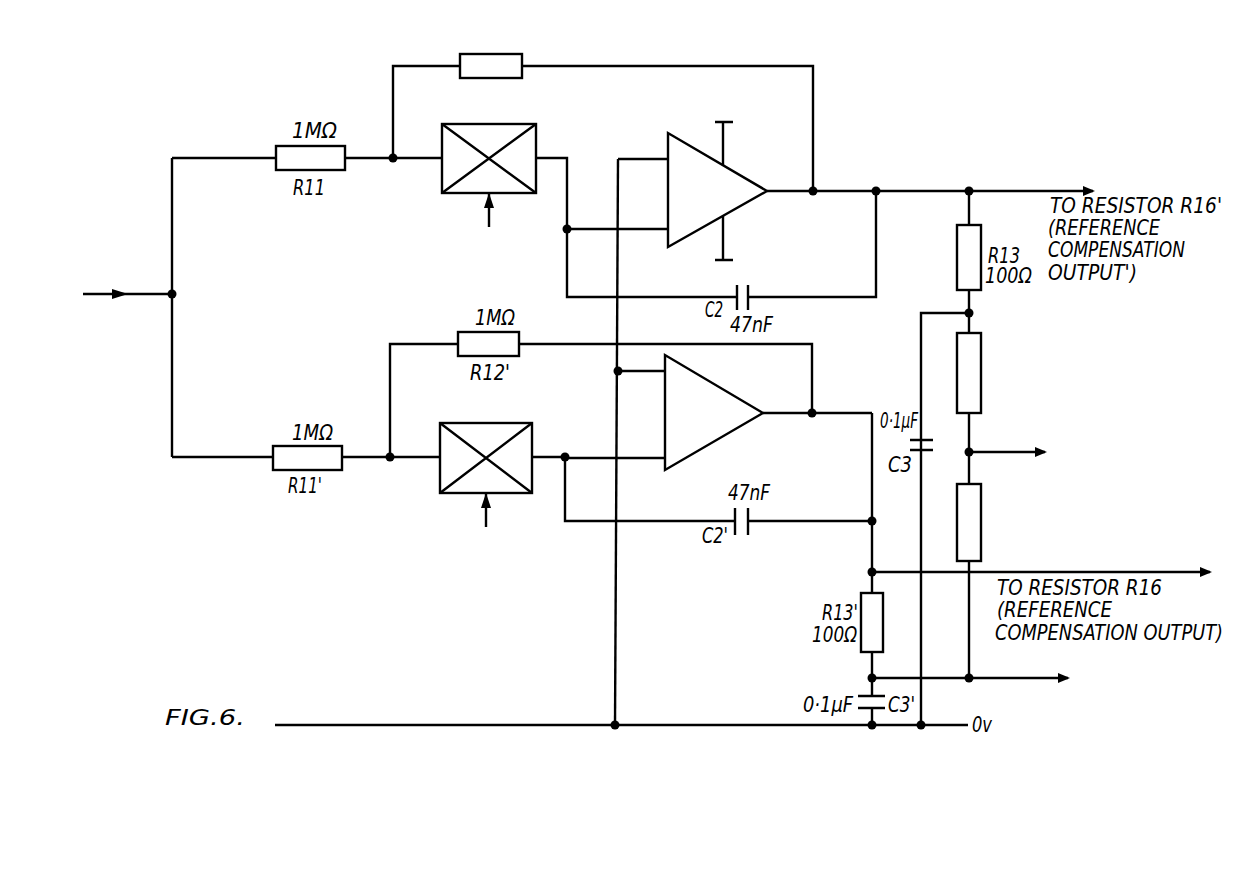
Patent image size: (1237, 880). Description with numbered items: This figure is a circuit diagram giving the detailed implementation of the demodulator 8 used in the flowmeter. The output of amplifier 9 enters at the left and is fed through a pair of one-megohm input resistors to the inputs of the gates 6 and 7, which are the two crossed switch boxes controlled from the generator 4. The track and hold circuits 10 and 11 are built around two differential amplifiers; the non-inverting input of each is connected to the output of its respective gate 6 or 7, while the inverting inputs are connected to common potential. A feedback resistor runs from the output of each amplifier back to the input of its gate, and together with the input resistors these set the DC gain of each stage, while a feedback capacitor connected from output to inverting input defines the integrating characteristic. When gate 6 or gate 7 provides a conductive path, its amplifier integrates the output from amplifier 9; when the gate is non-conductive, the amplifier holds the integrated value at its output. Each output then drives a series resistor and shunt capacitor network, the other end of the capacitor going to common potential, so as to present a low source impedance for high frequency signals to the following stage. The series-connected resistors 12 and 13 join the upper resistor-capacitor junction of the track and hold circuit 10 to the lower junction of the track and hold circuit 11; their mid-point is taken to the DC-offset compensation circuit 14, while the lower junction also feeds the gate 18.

The generator 4 is at (486, 385).
The gate 6 is at (537, 138).
The gate 7 is at (533, 437).
The demodulator 8 is at (926, 103).
The amplifier 9 is at (121, 331).
The track and hold circuit 10 is at (742, 163).
The track and hold circuit 11 is at (737, 386).
The resistor 12 is at (983, 388).
The resistor 13 is at (983, 532).
The DC-offset compensation circuit 14 is at (1077, 473).
The gate 18 is at (1022, 679).